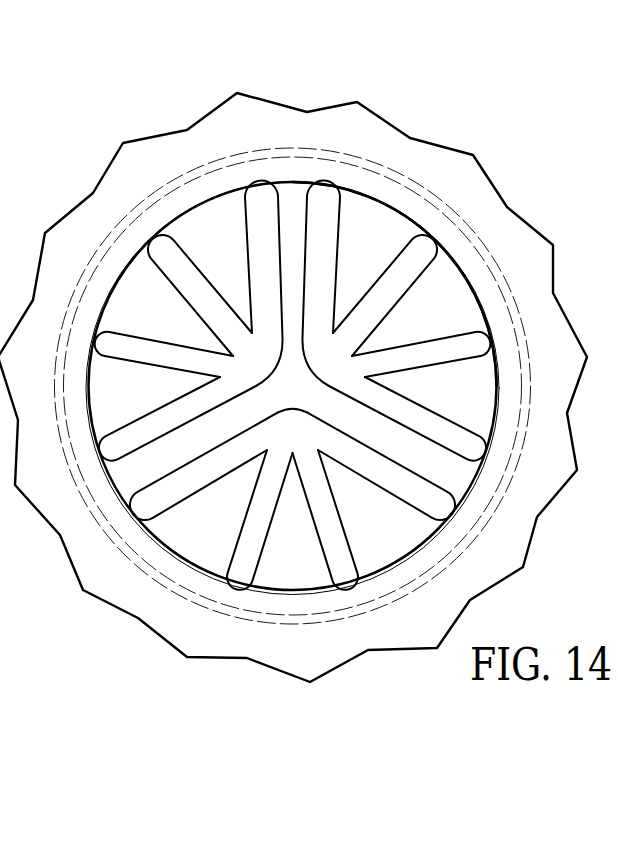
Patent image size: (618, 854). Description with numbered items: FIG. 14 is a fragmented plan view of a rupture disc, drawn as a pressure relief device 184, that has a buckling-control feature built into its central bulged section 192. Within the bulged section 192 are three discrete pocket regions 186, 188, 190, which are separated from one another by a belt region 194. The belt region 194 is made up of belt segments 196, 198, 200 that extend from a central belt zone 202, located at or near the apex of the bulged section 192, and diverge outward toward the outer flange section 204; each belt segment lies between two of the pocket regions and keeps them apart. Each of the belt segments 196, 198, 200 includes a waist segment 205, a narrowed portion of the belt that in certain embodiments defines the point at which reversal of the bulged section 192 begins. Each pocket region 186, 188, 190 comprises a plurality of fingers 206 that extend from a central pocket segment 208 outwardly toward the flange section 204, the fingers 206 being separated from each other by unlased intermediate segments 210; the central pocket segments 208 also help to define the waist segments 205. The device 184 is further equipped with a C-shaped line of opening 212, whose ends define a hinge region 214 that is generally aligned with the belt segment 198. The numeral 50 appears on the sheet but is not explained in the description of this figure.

The nozzle assembly 50 is at (10, 13).
The pressure relief device 184 is at (431, 114).
The pocket region 186 is at (227, 453).
The pocket region 188 is at (382, 409).
The pocket region 190 is at (223, 323).
The central bulged section 192 is at (478, 256).
The belt region 194 is at (452, 478).
The belt segment 196 is at (400, 447).
The belt segment 198 is at (291, 262).
The belt segment 200 is at (183, 447).
The central belt zone 202 is at (292, 388).
The outer flange section 204 is at (222, 137).
The waist segment 205 is at (296, 333).
The fingers 206 is at (240, 558).
The central pocket segment 208 is at (300, 443).
The unlased intermediate segment 210 is at (393, 540).
The C-shaped line of opening 212 is at (115, 277).
The hinge region 214 is at (292, 181).